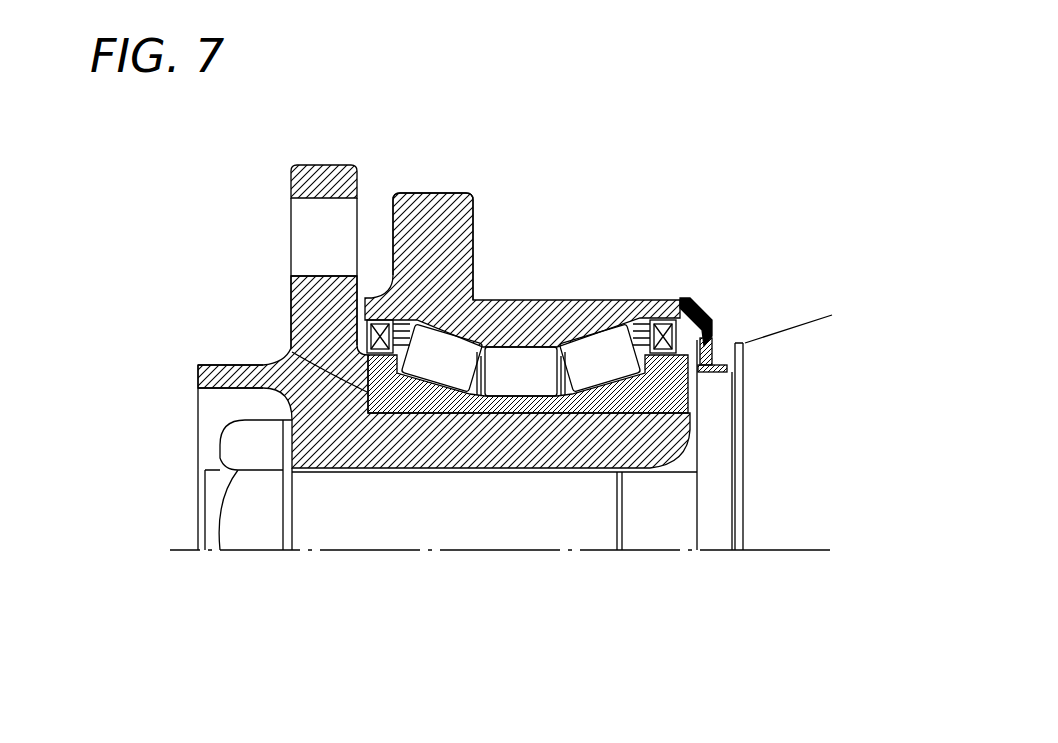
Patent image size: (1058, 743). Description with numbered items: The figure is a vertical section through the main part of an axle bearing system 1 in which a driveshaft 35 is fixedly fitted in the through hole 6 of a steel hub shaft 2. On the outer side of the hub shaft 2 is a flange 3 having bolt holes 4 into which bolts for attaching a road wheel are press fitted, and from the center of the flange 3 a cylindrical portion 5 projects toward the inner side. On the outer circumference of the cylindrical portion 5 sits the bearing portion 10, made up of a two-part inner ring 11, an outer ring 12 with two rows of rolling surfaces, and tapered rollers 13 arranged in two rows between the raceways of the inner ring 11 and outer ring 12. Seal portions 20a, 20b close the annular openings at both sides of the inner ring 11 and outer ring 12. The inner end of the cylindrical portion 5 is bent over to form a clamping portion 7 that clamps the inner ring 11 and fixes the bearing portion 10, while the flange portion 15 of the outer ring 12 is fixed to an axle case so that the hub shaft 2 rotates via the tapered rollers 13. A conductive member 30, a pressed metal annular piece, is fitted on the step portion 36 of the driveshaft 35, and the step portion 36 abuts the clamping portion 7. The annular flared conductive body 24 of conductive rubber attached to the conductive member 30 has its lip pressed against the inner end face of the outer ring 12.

The axle bearing system 1 is at (236, 283).
The hub shaft 2 is at (192, 407).
The flange 3 is at (312, 165).
The bolt holes 4 is at (303, 232).
The cylindrical portion 5 is at (489, 410).
The through hole 6 is at (348, 455).
The clamping portion 7 is at (698, 425).
The bearing portion 10 is at (606, 296).
The inner ring 11 is at (291, 349).
The outer ring 12 is at (566, 306).
The tapered rollers 13 is at (432, 342).
The flange portion 15 is at (515, 193).
The seal portion 20a is at (382, 335).
The seal portion 20b is at (666, 336).
The conductive body 24 is at (707, 320).
The conductive member 30 is at (713, 338).
The driveshaft 35 is at (771, 538).
The step portion 36 is at (716, 538).